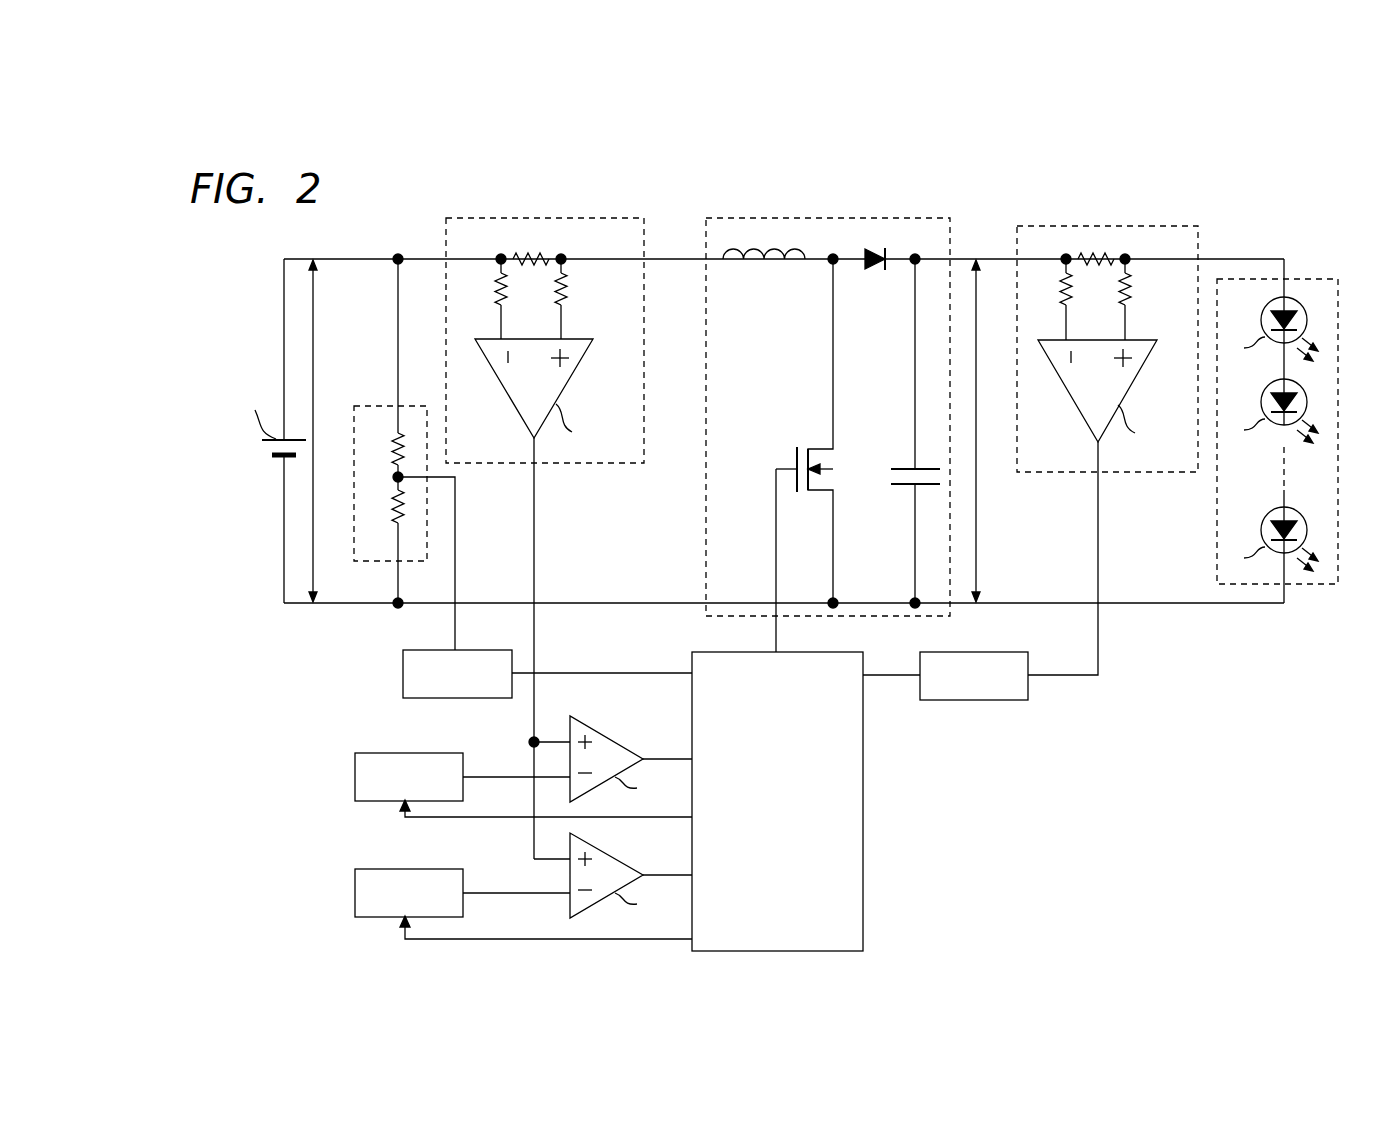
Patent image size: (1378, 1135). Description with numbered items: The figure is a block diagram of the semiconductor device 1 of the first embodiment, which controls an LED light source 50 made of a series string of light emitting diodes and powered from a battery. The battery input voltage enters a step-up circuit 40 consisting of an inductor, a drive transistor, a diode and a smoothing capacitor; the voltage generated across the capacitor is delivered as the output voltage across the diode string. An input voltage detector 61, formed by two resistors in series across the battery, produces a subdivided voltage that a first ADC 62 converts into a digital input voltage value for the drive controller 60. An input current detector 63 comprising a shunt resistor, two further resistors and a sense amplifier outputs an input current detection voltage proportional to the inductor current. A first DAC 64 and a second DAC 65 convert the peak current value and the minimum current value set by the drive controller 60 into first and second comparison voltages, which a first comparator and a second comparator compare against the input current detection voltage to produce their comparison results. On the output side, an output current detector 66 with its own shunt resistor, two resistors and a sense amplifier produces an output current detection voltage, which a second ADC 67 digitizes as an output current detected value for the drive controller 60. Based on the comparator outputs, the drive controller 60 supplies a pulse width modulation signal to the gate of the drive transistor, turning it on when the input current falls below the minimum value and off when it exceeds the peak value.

The semiconductor device 1 is at (821, 196).
The step-up circuit 40 is at (899, 218).
The LED light source 50 is at (1307, 279).
The drive controller 60 is at (863, 803).
The input voltage detector 61 is at (386, 406).
The first ADC 62 is at (403, 672).
The input current detector 63 is at (613, 463).
The first DAC 64 is at (355, 771).
The second DAC 65 is at (355, 887).
The output current detector 66 is at (1160, 472).
The second ADC 67 is at (1028, 686).